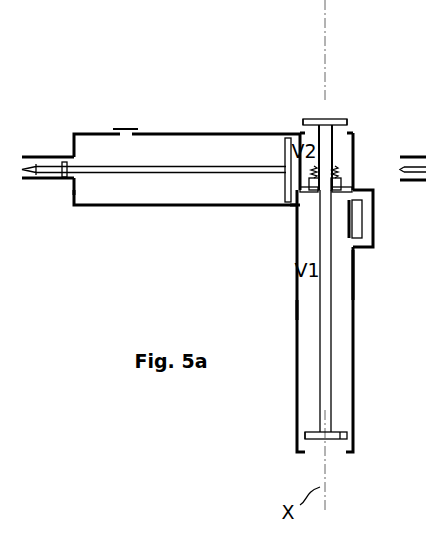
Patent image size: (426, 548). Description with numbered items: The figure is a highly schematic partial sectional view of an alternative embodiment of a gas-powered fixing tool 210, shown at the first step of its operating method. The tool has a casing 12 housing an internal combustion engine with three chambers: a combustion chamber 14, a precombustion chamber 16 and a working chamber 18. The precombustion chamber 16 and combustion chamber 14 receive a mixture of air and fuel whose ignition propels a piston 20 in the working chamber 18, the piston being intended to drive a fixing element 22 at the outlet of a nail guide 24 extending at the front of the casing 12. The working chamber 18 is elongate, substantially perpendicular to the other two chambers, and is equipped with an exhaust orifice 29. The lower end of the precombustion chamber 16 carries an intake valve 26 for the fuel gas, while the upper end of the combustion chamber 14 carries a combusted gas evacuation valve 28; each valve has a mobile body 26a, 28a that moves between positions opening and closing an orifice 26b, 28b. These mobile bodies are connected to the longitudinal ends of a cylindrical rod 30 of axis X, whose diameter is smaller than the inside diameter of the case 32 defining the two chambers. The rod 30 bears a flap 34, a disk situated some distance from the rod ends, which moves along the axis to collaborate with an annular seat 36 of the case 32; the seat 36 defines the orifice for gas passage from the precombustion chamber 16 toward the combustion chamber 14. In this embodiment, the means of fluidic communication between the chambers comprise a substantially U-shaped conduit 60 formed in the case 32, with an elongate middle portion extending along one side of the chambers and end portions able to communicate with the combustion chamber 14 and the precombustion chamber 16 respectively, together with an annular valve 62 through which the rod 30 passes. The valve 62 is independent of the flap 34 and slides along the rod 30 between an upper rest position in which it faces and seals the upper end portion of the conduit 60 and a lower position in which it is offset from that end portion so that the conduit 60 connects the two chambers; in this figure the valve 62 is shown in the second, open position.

The casing 12 is at (271, 301).
The combustion chamber 14 is at (356, 142).
The precombustion chamber 16 is at (340, 380).
The working chamber 18 is at (226, 147).
The piston 20 is at (141, 170).
The fixing element 22 is at (45, 165).
The nail guide 24 is at (37, 182).
The intake valve 26 is at (336, 456).
The mobile body 26a is at (337, 437).
The orifice 26b is at (315, 450).
The combusted gas evacuation valve 28 is at (317, 100).
The mobile body 28a is at (305, 112).
The orifice 28b is at (338, 130).
The exhaust orifice 29 is at (127, 127).
The cylindrical rod 30 is at (324, 322).
The case 32 is at (358, 270).
The flap 34 is at (343, 183).
The annular seat 36 is at (297, 212).
The conduit 60 is at (366, 228).
The valve 62 is at (305, 172).
The tool 210 is at (207, 255).